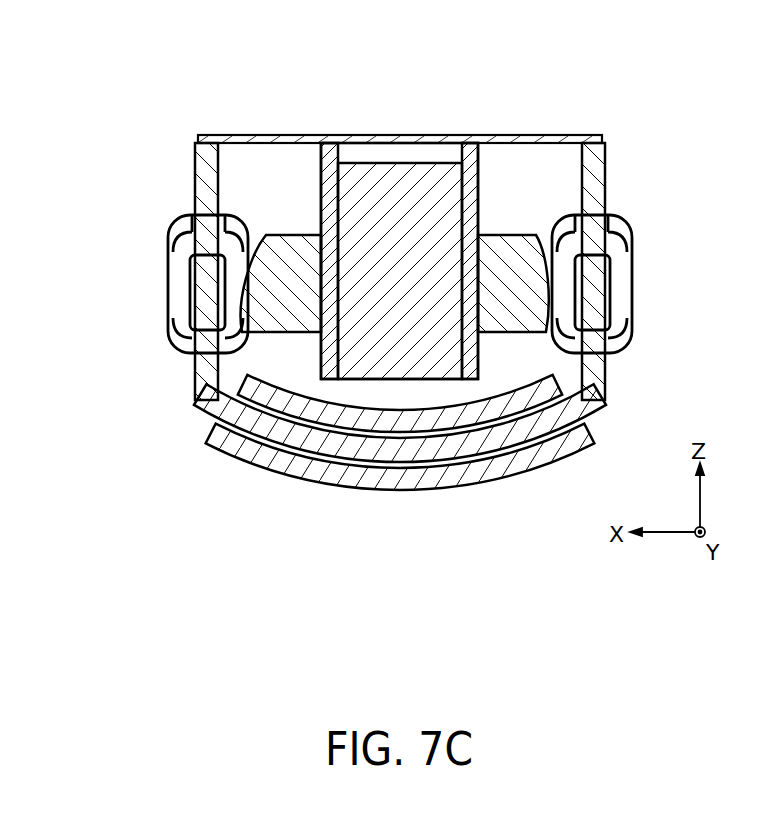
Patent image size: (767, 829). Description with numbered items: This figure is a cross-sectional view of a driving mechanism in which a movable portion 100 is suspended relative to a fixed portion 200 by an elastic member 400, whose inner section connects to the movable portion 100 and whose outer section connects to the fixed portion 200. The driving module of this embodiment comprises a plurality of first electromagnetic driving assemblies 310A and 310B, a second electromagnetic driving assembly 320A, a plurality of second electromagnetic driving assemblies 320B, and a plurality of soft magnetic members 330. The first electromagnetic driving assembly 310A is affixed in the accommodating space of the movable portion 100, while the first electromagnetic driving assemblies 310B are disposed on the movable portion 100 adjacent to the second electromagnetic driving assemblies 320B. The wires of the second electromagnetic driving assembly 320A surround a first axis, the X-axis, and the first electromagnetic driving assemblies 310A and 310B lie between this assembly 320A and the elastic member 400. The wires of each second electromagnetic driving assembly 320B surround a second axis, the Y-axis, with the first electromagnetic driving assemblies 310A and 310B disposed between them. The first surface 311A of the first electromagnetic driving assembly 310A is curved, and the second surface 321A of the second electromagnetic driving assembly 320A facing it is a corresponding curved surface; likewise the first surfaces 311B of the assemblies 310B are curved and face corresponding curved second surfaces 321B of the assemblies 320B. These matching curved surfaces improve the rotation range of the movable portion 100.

The movable portion 100 is at (328, 155).
The fixed portion 200 is at (597, 170).
The elastic member 400 is at (501, 140).
The first electromagnetic driving assembly 310A is at (398, 190).
The first electromagnetic driving assembly 310B is at (517, 242).
The first surface 311B is at (257, 320).
The second surface 321B is at (274, 250).
The second electromagnetic driving assembly 320B is at (628, 298).
The first surface 311A is at (393, 388).
The second surface 321A is at (524, 386).
The soft magnetic member 330 is at (205, 391).
The second electromagnetic driving assembly 320A is at (257, 462).